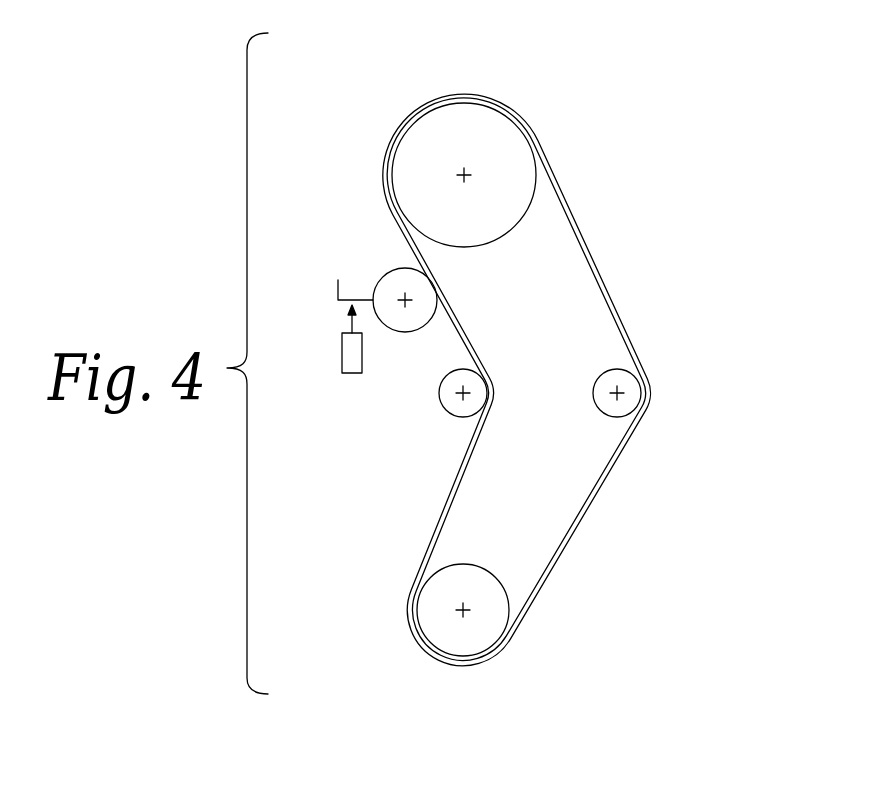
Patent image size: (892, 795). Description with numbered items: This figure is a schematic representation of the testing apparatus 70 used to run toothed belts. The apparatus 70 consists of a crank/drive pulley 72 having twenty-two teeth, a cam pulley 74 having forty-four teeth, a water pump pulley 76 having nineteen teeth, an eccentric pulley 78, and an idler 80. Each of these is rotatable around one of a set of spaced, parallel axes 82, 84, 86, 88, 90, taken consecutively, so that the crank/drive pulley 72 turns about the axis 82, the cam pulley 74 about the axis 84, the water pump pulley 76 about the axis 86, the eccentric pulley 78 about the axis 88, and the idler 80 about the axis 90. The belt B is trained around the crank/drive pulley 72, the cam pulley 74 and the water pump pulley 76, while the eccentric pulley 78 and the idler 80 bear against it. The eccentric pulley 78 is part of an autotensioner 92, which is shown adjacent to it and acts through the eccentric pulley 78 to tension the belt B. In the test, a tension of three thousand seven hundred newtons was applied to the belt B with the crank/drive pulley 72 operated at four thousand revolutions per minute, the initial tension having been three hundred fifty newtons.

The testing apparatus 70 is at (609, 138).
The crank/drive pulley 72 is at (485, 633).
The cam pulley 74 is at (513, 142).
The water pump pulley 76 is at (635, 392).
The eccentric pulley 78 is at (397, 283).
The idler 80 is at (460, 397).
The axis 82 is at (461, 610).
The axis 84 is at (467, 170).
The axis 86 is at (619, 391).
The axis 88 is at (407, 299).
The axis 90 is at (465, 391).
The autotensioner 92 is at (347, 356).
The belt B is at (582, 520).